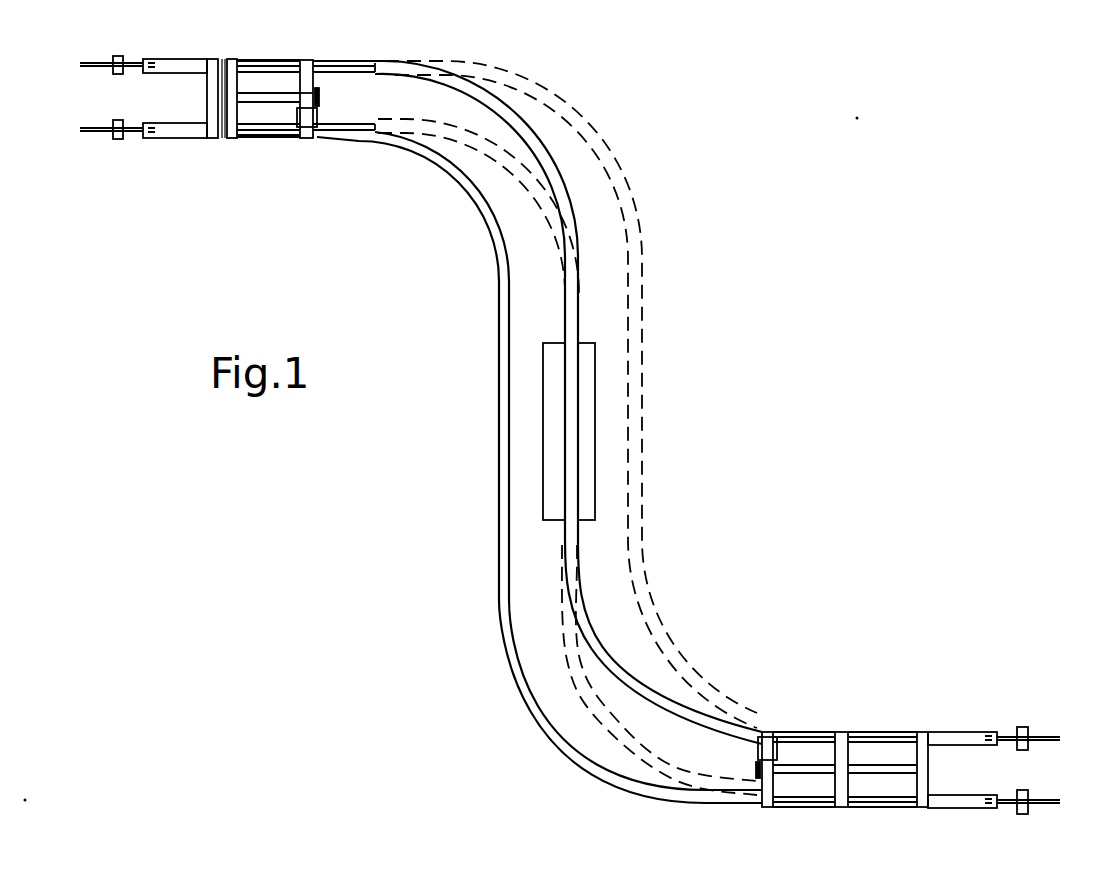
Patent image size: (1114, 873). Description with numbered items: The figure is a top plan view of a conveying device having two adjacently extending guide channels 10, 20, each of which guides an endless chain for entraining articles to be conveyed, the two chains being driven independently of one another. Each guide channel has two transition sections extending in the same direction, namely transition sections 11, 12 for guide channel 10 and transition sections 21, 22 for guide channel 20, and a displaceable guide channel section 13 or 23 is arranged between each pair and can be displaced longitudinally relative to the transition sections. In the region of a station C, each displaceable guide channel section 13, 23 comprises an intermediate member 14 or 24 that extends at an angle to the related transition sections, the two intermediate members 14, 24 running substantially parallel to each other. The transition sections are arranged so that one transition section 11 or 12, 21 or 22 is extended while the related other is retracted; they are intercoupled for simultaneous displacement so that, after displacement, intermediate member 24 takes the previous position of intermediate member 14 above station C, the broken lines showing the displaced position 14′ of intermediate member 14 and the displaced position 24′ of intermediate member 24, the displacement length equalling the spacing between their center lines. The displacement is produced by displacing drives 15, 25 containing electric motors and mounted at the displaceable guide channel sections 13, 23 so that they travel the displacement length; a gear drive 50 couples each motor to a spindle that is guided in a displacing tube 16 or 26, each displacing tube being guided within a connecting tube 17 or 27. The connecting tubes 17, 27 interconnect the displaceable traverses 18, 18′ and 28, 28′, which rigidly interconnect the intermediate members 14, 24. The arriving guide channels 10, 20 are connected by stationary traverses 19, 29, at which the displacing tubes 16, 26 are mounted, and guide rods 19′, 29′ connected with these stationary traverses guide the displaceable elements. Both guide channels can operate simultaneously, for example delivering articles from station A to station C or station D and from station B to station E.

The guide channel 10 is at (177, 73).
The transition section 11 is at (240, 51).
The transition section 12 is at (828, 700).
The displaceable guide channel section 13 is at (575, 212).
The intermediate member 14 is at (570, 329).
The position of intermediate member 14′ is at (640, 313).
The displacing drive 15 is at (312, 116).
The displacing tube 16 is at (222, 98).
The connecting tube 17 is at (252, 102).
The displaceable traverse 18 is at (307, 138).
The displaceable traverse 18′ is at (232, 138).
The stationary traverse 19 is at (213, 138).
The guide rod 19′ is at (258, 65).
The guide channel 20 is at (177, 138).
The transition section 21 is at (278, 144).
The transition section 22 is at (802, 812).
The displaceable guide channel section 23 is at (472, 267).
The intermediate member 24 is at (498, 374).
The position of intermediate member 24′ is at (570, 378).
The displacing drive 25 is at (758, 750).
The displacing tube 26 is at (898, 765).
The connecting tube 27 is at (802, 770).
The displaceable traverse 28 is at (770, 732).
The displaceable traverse 28′ is at (840, 732).
The stationary traverse 29 is at (925, 732).
The guide rod 29′ is at (870, 800).
The gear drive 50 is at (322, 96).
The station C is at (553, 352).
The station A is at (1082, 736).
The station B is at (1082, 797).
The station D is at (57, 64).
The station E is at (55, 131).